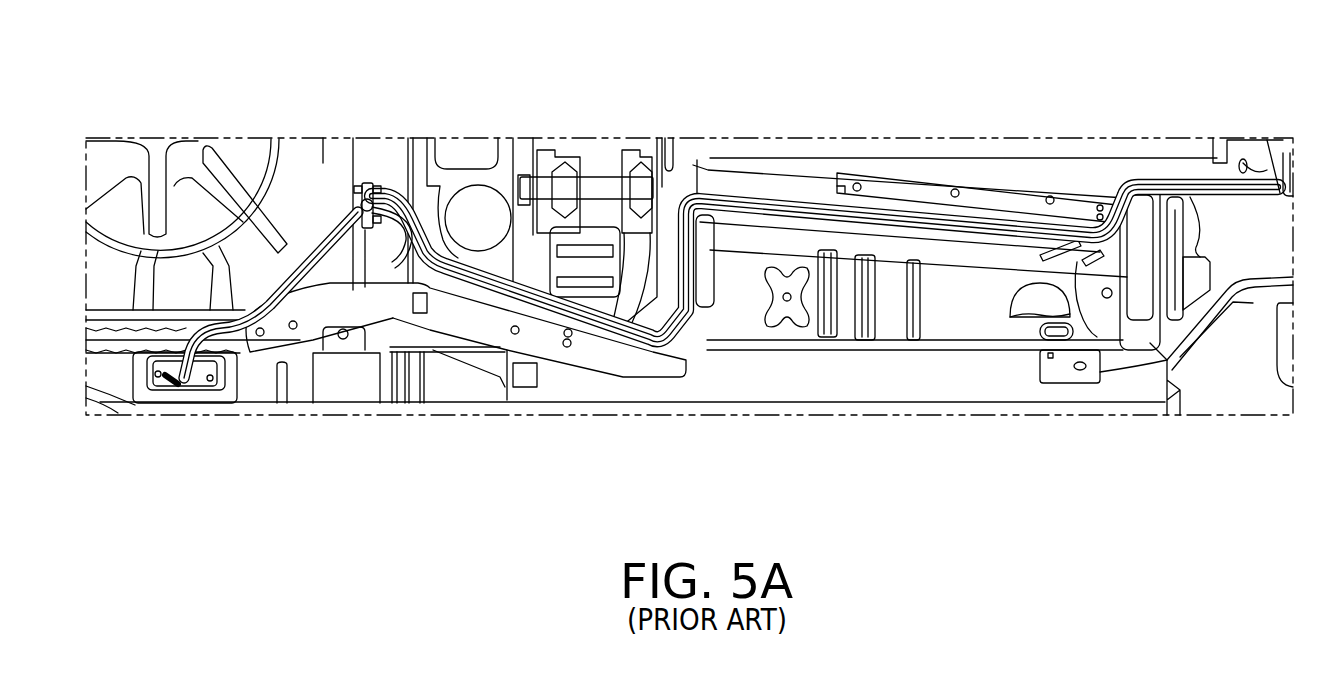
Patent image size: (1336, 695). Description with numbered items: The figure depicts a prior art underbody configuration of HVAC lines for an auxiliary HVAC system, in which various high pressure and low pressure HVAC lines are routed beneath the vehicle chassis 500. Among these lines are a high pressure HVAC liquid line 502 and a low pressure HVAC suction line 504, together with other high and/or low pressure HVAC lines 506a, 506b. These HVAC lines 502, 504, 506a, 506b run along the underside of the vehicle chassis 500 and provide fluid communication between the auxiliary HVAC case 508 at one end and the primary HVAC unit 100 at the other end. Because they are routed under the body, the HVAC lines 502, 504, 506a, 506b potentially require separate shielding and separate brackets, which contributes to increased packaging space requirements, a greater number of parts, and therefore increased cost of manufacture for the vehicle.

The primary HVAC unit 100 is at (217, 392).
The vehicle chassis 500 is at (913, 108).
The high pressure HVAC liquid line 502 is at (352, 190).
The low pressure HVAC suction line 504 is at (370, 199).
The HVAC line 506a is at (466, 330).
The HVAC line 506b is at (423, 190).
The auxiliary HVAC case 508 is at (1283, 142).